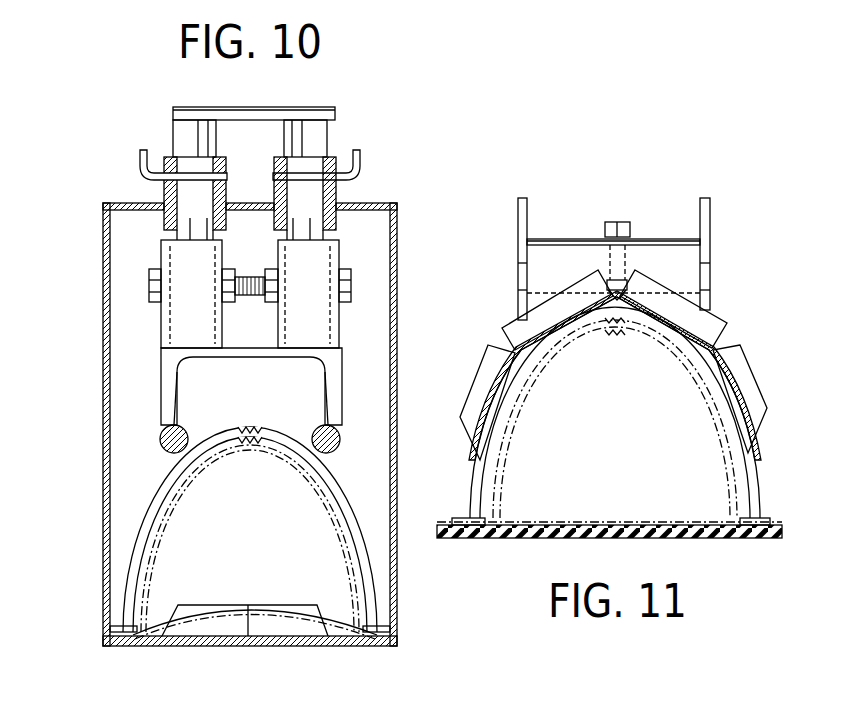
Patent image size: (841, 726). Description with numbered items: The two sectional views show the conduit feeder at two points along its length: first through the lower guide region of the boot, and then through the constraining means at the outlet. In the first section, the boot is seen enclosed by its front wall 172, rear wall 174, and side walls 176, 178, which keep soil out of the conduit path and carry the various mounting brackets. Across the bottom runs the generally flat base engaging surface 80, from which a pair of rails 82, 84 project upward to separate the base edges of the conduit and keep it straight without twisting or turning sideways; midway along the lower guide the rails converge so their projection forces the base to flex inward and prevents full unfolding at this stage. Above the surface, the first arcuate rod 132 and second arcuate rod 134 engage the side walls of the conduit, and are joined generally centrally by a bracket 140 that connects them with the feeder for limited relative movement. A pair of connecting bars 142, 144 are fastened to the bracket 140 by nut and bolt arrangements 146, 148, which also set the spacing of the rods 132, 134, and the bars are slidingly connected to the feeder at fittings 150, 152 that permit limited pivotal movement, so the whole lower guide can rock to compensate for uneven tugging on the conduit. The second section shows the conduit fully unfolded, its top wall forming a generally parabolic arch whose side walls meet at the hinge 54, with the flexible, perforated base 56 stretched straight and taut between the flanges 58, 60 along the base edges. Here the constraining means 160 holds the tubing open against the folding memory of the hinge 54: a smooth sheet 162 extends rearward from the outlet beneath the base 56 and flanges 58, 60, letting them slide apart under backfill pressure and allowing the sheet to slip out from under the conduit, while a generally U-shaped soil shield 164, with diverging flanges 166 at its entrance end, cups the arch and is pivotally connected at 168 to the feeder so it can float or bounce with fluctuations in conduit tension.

In FIG. 10, the fitting 150 is at (367, 180).
In FIG. 10, the fitting 152 is at (147, 187).
In FIG. 10, the rear wall 174 is at (380, 203).
In FIG. 10, the side wall 178 is at (105, 327).
In FIG. 10, the side wall 176 is at (395, 368).
In FIG. 10, the connecting bar 144 is at (163, 233).
In FIG. 10, the connecting bar 142 is at (343, 235).
In FIG. 10, the nut and bolt arrangement 148 is at (145, 273).
In FIG. 10, the nut and bolt arrangement 146 is at (357, 288).
In FIG. 10, the bracket 140 is at (160, 385).
In FIG. 10, the second arcuate rod 134 is at (161, 438).
In FIG. 10, the first arcuate rod 132 is at (340, 437).
In FIG. 10, the base engaging surface 80 is at (337, 627).
In FIG. 10, the rail 82 is at (208, 625).
In FIG. 10, the rail 84 is at (277, 627).
In FIG. 10, the front wall 172 is at (247, 645).
In FIG. 11, the pivotal connection 168 is at (712, 255).
In FIG. 11, the constraining means 160 is at (493, 323).
In FIG. 11, the soil shield 164 is at (720, 387).
In FIG. 11, the diverging flanges 166 is at (740, 378).
In FIG. 11, the hinge 54 is at (615, 330).
In FIG. 11, the flange 60 is at (463, 517).
In FIG. 11, the flange 58 is at (757, 515).
In FIG. 11, the flexible perforated base 56 is at (585, 520).
In FIG. 11, the sheet 162 is at (578, 537).